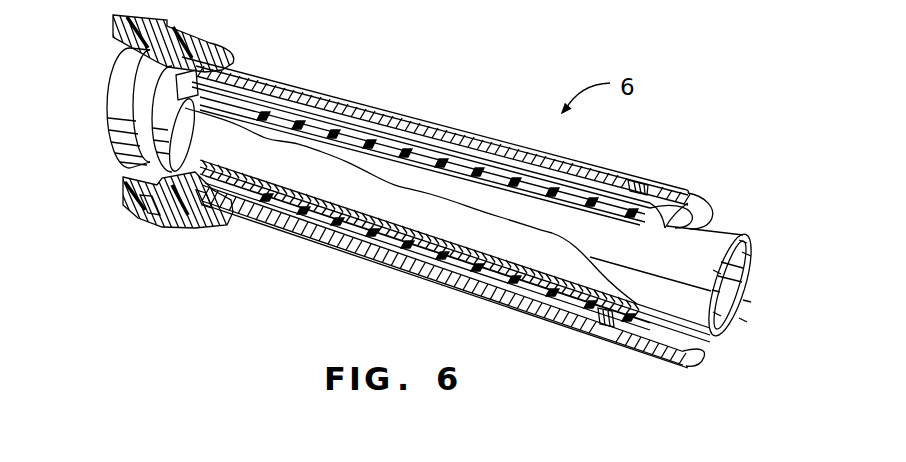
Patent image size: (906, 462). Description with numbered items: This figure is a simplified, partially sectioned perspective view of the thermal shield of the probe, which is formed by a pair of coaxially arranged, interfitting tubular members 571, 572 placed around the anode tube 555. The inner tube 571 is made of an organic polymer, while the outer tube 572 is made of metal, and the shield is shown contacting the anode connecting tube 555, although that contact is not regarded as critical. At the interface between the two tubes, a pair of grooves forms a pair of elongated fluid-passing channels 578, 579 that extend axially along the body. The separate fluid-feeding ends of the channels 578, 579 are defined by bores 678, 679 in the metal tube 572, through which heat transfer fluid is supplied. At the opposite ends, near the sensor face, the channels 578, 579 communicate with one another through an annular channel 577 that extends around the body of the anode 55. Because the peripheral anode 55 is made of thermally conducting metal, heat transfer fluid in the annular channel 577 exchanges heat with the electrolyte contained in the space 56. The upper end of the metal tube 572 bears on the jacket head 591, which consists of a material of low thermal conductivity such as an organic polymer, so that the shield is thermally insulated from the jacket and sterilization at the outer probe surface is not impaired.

The anode 55 is at (117, 93).
The space 56 is at (134, 177).
The jacket head 591 is at (153, 218).
The annular channel 577 is at (206, 205).
The fluid-passing channel 578 is at (443, 260).
The fluid-passing channel 579 is at (598, 200).
The bore 679 is at (642, 183).
The bore 678 is at (603, 322).
The tubular member 572 is at (690, 198).
The tubular member 571 is at (667, 217).
The anode tube 555 is at (717, 242).